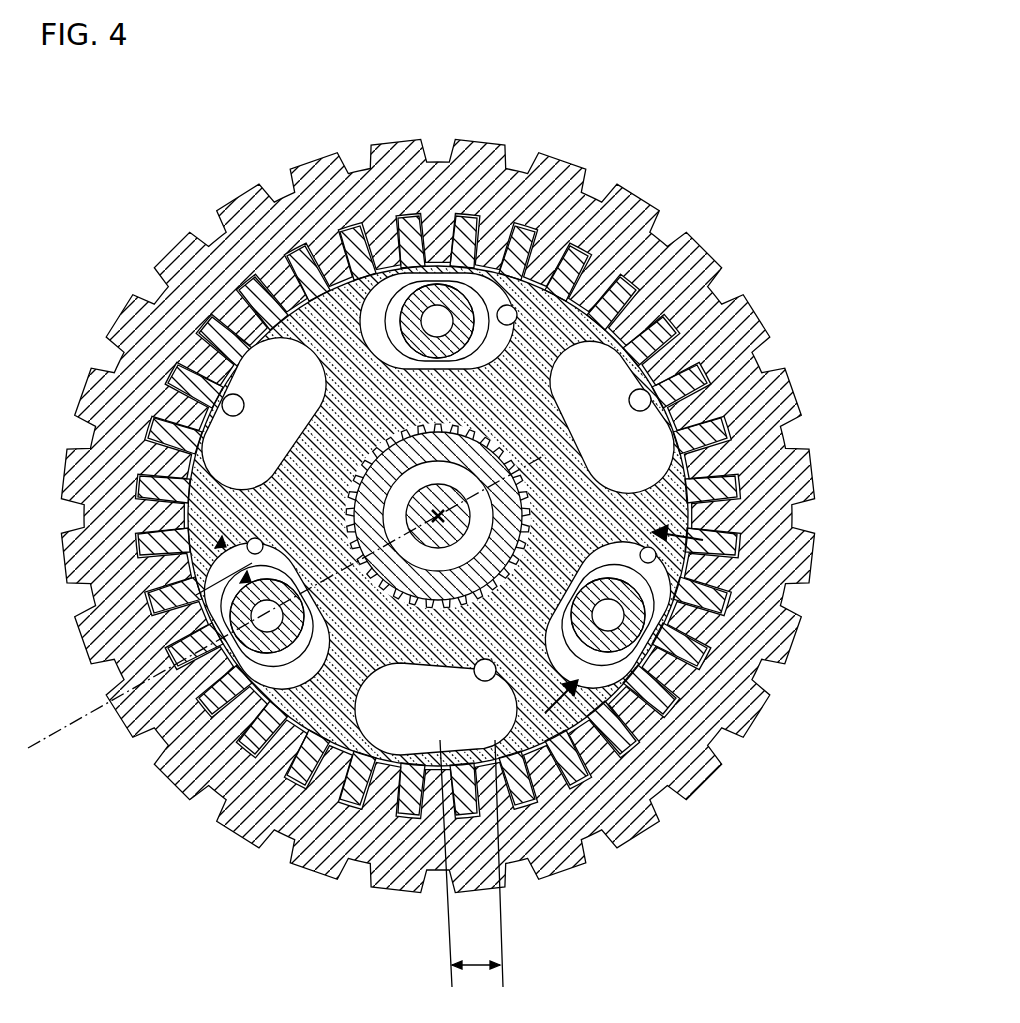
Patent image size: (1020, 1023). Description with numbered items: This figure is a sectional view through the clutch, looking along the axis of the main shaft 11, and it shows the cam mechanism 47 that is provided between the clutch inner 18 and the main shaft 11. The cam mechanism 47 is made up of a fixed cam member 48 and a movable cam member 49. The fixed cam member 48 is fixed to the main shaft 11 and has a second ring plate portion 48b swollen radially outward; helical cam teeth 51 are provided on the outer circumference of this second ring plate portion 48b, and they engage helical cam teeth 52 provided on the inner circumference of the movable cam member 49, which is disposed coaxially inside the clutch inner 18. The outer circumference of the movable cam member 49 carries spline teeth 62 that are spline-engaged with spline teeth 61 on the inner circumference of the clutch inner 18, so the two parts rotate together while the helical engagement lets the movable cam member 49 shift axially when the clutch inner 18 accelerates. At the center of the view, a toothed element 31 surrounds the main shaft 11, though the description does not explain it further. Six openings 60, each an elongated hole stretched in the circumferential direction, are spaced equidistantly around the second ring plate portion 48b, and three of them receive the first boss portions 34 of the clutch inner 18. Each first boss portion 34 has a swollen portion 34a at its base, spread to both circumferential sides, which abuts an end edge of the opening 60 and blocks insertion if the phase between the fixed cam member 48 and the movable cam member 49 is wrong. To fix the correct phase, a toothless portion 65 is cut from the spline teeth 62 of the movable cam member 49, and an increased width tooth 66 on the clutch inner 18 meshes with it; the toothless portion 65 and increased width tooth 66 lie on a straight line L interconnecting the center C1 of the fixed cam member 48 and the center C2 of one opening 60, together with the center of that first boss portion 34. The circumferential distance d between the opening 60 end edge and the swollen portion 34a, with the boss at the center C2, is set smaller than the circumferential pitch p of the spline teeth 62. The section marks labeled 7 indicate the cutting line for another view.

The clutch inner 18 is at (402, 148).
The first boss portion 34 is at (513, 246).
The swollen portion 34a is at (362, 243).
The opening 60 is at (513, 300).
The second ring plate portion 48b is at (655, 258).
The spline teeth 61 is at (312, 280).
The sun gear 31 is at (430, 494).
The main shaft 11 is at (455, 495).
The fixed cam member 48 is at (365, 522).
The center of the fixed cam member C1 is at (440, 516).
The center of the opening C2 is at (270, 612).
The straight line L is at (40, 765).
The distance d is at (213, 556).
The toothless portion 65 is at (245, 655).
The increased width tooth 66 is at (307, 672).
The cam teeth 52 is at (500, 752).
The spline teeth 62 is at (668, 690).
The movable cam member 49 is at (290, 765).
The cam teeth 51 is at (335, 790).
The cam mechanism 47 is at (580, 790).
The circumferential pitch p is at (478, 968).
The section line 7- 7 is at (618, 614).